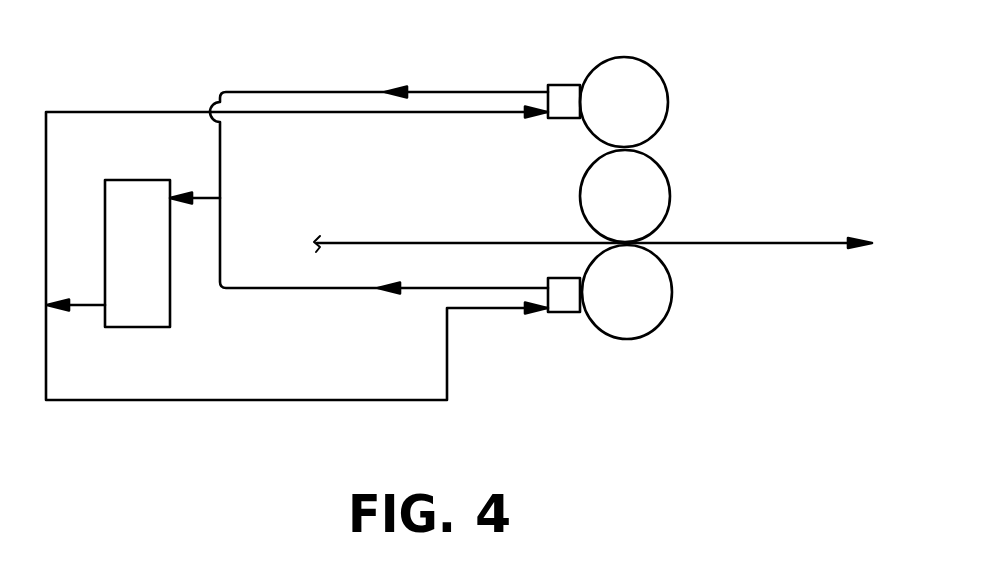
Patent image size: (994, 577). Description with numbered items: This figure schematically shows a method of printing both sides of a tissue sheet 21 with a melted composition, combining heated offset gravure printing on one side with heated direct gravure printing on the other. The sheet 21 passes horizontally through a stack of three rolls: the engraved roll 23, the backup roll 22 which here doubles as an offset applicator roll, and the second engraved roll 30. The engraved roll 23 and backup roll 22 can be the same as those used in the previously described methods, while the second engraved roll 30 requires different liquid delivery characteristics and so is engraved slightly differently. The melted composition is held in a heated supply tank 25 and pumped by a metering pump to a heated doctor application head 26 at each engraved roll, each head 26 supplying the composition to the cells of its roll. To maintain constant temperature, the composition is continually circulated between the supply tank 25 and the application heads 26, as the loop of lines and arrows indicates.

The web 21 is at (415, 242).
The backup roll 22 is at (670, 185).
The engraved roll 23 is at (668, 318).
The heated supply tank 25 is at (155, 327).
The heated doctor application head 26 is at (566, 85).
The second engraved roll 30 is at (662, 73).